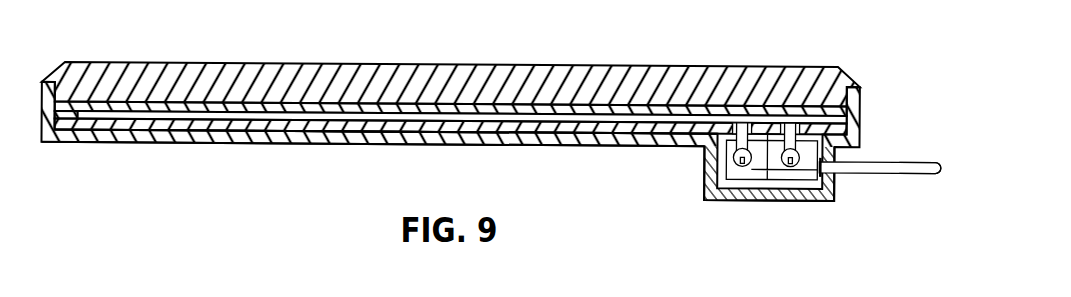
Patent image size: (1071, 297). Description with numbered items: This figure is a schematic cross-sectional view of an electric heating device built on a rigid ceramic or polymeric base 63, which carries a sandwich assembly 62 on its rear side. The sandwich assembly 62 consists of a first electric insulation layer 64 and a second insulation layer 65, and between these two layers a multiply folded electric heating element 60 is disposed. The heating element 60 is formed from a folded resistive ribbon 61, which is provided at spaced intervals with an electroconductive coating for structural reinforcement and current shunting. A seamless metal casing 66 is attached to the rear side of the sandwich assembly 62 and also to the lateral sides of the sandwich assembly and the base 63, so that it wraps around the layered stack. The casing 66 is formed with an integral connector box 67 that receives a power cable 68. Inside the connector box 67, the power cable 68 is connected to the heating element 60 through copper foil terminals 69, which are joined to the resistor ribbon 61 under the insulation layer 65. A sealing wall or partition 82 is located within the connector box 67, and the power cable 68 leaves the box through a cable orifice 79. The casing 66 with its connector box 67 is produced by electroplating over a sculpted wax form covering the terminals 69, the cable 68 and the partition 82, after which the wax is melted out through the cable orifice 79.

The electric heating element 60 is at (520, 143).
The folded resistive ribbon 61 is at (592, 119).
The sandwich assembly 62 is at (136, 130).
The base 63 is at (243, 75).
The first electric insulation layer 64 is at (443, 108).
The second insulation layer 65 is at (375, 131).
The metal casing 66 is at (265, 144).
The connector box 67 is at (748, 192).
The power cable 68 is at (938, 157).
The copper foil terminals 69 is at (788, 113).
The cable orifice 79 is at (838, 152).
The sealing wall or partition 82 is at (836, 171).